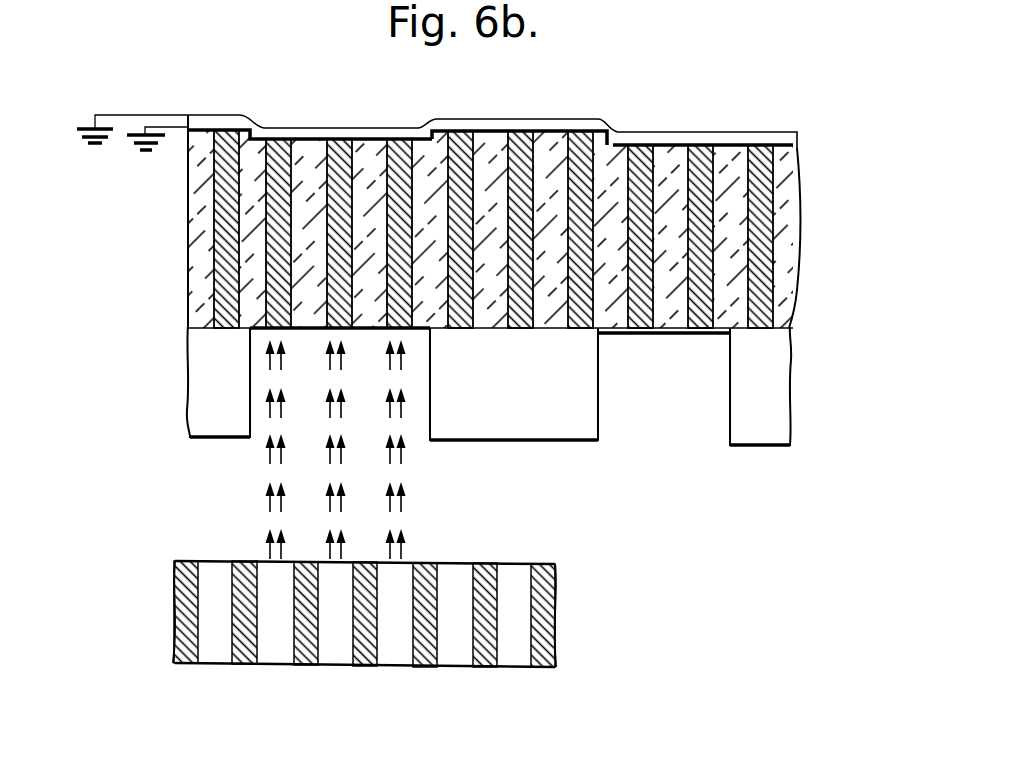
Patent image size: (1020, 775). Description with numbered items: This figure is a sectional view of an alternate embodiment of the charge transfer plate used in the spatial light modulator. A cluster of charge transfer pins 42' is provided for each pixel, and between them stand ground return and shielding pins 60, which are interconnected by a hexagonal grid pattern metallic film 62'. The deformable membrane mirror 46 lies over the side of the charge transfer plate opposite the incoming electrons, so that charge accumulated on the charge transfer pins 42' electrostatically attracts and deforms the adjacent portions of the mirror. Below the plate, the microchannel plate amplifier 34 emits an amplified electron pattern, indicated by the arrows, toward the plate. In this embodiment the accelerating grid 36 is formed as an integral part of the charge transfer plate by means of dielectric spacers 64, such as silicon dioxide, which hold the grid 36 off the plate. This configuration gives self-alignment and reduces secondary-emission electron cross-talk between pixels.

The microchannel plate amplifier 34 is at (557, 610).
The grid 36 is at (216, 438).
The charge transfer pins 42' is at (490, 107).
The deformable membrane mirror 46 is at (360, 128).
The ground return and shielding pins 60 is at (542, 138).
The hexagonal grid pattern metallic film 62' is at (519, 110).
The dielectric spacers 64 is at (600, 410).